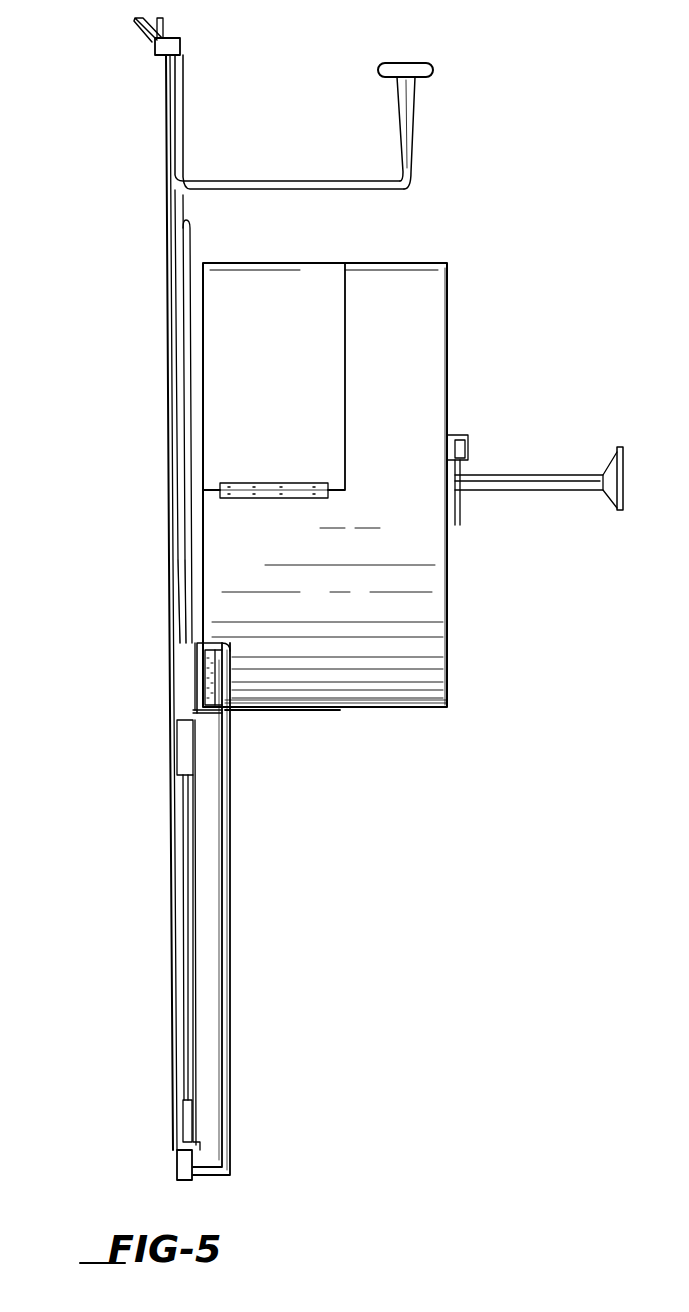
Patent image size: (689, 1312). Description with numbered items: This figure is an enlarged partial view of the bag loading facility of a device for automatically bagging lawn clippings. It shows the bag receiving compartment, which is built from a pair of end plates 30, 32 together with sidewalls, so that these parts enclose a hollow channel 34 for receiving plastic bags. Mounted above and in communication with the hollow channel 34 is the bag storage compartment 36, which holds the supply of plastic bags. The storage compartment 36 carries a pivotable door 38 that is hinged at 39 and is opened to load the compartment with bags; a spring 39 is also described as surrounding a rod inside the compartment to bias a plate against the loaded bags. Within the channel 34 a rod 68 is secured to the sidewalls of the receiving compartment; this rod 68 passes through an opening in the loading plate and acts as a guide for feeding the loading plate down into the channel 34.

The end plate 30 is at (203, 714).
The end plate 32 is at (173, 693).
The hollow channel 34 is at (180, 562).
The bag storage compartment 36 is at (418, 306).
The pivotable door 38 is at (284, 397).
The hinge 39 is at (268, 498).
The rod 68 is at (172, 241).